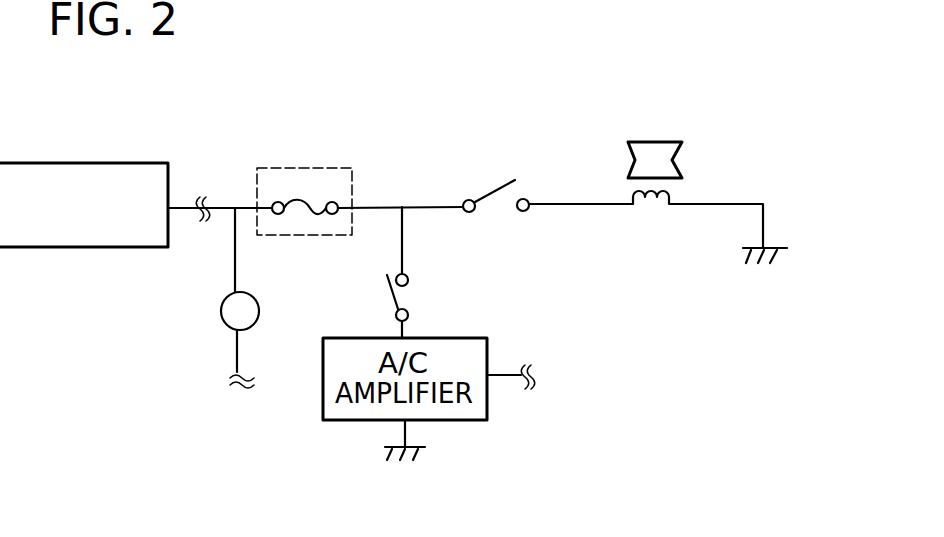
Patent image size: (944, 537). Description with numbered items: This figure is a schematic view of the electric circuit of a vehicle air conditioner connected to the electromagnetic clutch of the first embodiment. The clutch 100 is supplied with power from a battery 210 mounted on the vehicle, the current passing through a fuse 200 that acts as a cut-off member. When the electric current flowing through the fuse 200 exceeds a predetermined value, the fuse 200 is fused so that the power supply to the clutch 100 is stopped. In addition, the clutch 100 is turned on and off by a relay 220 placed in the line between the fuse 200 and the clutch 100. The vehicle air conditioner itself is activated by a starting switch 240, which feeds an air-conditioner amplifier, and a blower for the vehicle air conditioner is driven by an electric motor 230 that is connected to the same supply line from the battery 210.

The clutch 100 is at (699, 134).
The fuse 200 is at (310, 213).
The battery 210 is at (62, 250).
The relay 220 is at (498, 207).
The electric motor 230 is at (222, 322).
The starting switch 240 is at (408, 295).